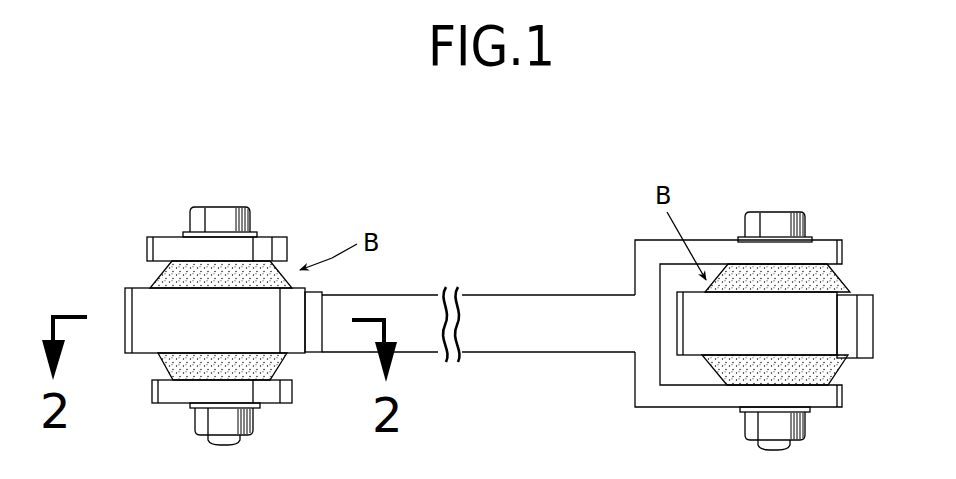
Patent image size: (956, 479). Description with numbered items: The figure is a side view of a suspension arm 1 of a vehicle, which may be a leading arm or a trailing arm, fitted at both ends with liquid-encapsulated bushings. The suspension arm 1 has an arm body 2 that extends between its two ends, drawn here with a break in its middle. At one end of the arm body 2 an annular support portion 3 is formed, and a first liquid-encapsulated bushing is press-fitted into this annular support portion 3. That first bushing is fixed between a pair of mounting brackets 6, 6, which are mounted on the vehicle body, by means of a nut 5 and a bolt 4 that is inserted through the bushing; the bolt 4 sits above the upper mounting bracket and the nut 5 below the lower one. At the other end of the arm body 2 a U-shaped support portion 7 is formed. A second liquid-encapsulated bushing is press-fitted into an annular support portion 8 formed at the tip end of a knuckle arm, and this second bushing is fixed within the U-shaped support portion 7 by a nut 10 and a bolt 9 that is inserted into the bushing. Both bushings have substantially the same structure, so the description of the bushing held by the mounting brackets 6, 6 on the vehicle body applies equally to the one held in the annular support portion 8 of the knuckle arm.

The suspension arm 1 is at (505, 280).
The arm body 2 is at (513, 342).
The annular support portion 3 is at (295, 338).
The bolt 4 is at (227, 215).
The nut 5 is at (233, 418).
The mounting brackets 6 is at (163, 243).
The U-shaped support portion 7 is at (690, 398).
The annular support portion 8 is at (865, 328).
The bolt 9 is at (780, 218).
The nut 10 is at (790, 422).